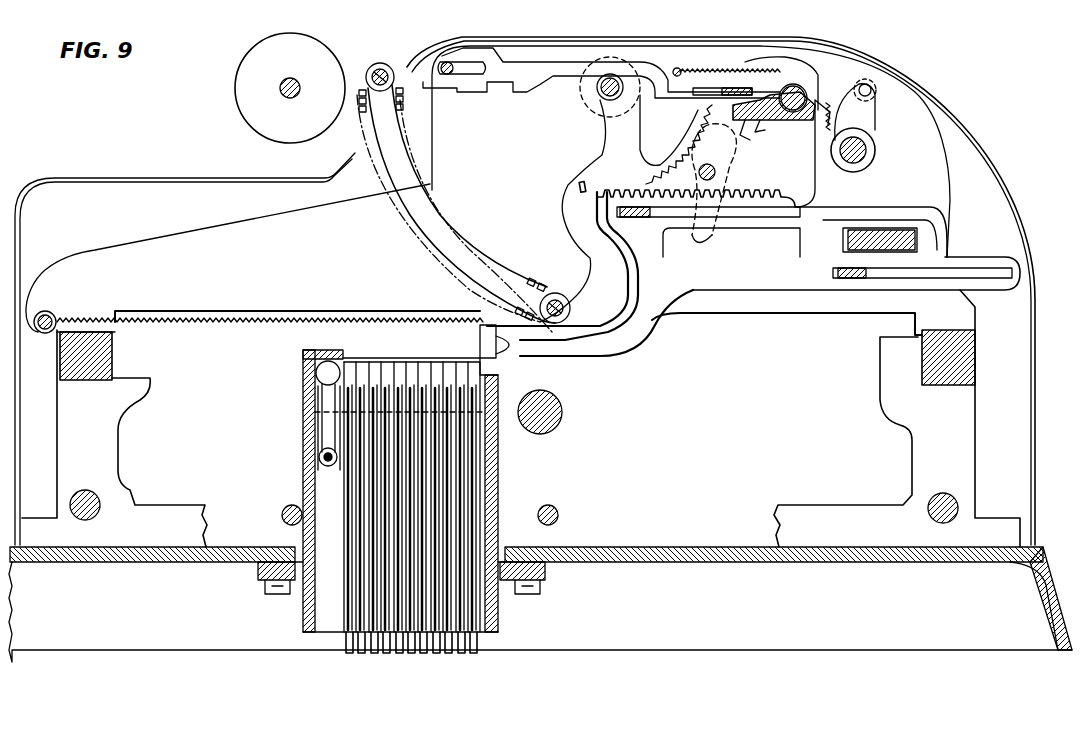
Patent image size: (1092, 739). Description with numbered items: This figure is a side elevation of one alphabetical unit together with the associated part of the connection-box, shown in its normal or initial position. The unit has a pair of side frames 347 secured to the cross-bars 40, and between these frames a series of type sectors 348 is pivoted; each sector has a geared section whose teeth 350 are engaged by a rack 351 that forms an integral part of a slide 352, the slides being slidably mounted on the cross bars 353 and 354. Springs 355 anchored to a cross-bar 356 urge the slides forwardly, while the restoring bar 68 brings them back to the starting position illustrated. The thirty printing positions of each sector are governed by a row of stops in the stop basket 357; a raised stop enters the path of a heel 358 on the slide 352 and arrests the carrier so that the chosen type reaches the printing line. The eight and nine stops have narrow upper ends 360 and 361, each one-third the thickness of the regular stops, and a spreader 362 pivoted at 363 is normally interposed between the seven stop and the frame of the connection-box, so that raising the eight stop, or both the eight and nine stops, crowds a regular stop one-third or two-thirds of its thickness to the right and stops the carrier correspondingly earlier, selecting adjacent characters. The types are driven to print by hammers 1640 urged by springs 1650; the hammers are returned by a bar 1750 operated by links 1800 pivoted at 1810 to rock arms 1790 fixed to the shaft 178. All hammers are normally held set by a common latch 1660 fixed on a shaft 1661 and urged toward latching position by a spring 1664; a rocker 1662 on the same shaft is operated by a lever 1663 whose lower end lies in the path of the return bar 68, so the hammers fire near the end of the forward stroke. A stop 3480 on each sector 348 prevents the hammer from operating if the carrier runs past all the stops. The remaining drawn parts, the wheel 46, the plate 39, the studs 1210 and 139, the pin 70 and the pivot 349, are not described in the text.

The wheel 46 is at (300, 132).
The side frames 347 is at (187, 231).
The cross-bar 356 is at (52, 316).
The springs 355 is at (252, 327).
The heel 358 is at (494, 360).
The cross-bars 40 is at (112, 373).
The plate 39 is at (118, 440).
The stud 1210 is at (100, 503).
The stud 139 is at (932, 510).
The pin 70 is at (562, 418).
The stop basket 357 is at (503, 473).
The spreader 362 is at (317, 372).
The narrow upper end 360 is at (320, 396).
The narrow upper end 361 is at (312, 421).
The pivot 363 is at (322, 457).
The type sectors 348 is at (567, 235).
The stop 3480 is at (578, 186).
The pivot 349 is at (601, 97).
The teeth 350 is at (648, 178).
The slides 352 is at (770, 289).
The racks 351 is at (737, 196).
The cross bar 353 is at (629, 216).
The cross bar 354 is at (852, 279).
The restoring bar 68 is at (845, 242).
The lever 1663 is at (723, 160).
The links 1800 is at (805, 58).
The hammers 1640 is at (650, 82).
The springs 1650 is at (705, 62).
The bar 1750 is at (762, 58).
The latch 1660 is at (748, 122).
The shaft 1661 is at (762, 120).
The rocker 1662 is at (748, 141).
The shaft 178 is at (875, 150).
The pivot 1810 is at (869, 86).
The spring 1664 is at (834, 121).
The rock arms 1790 is at (845, 112).